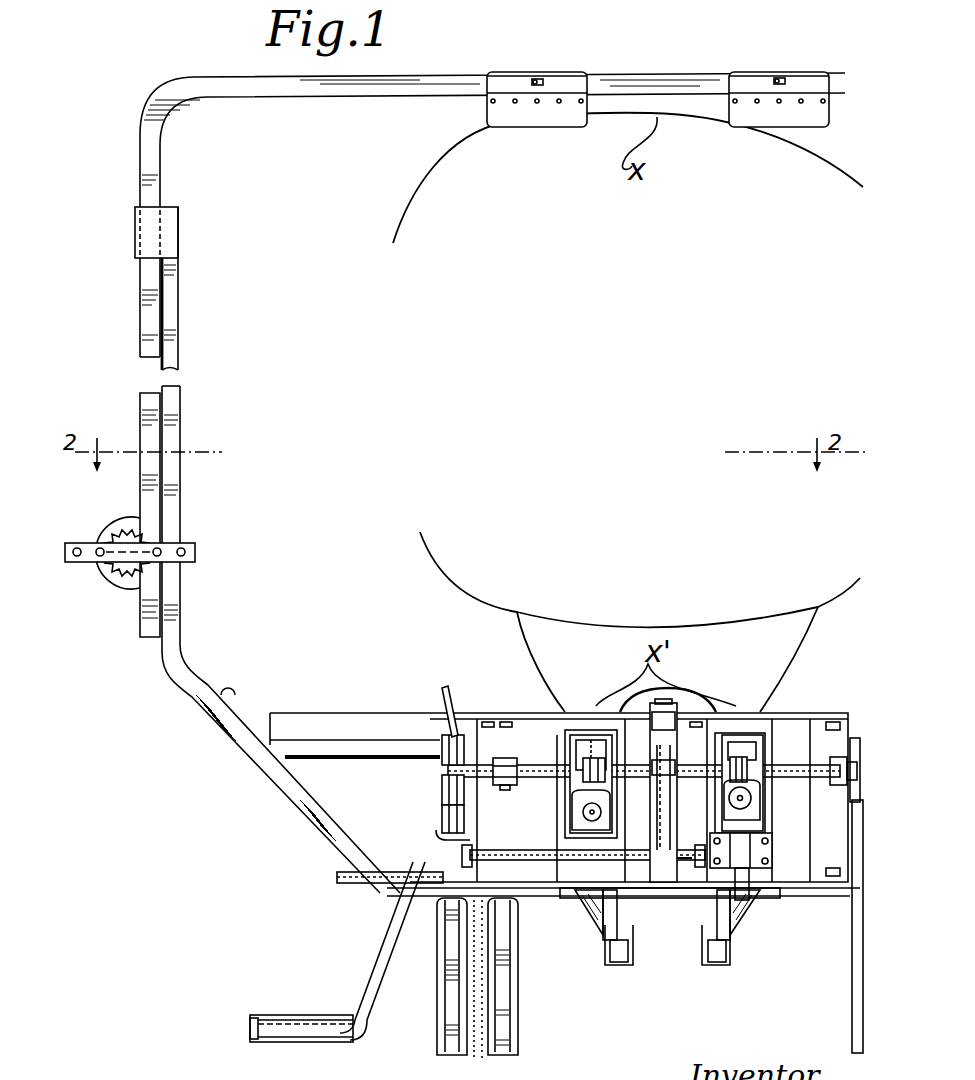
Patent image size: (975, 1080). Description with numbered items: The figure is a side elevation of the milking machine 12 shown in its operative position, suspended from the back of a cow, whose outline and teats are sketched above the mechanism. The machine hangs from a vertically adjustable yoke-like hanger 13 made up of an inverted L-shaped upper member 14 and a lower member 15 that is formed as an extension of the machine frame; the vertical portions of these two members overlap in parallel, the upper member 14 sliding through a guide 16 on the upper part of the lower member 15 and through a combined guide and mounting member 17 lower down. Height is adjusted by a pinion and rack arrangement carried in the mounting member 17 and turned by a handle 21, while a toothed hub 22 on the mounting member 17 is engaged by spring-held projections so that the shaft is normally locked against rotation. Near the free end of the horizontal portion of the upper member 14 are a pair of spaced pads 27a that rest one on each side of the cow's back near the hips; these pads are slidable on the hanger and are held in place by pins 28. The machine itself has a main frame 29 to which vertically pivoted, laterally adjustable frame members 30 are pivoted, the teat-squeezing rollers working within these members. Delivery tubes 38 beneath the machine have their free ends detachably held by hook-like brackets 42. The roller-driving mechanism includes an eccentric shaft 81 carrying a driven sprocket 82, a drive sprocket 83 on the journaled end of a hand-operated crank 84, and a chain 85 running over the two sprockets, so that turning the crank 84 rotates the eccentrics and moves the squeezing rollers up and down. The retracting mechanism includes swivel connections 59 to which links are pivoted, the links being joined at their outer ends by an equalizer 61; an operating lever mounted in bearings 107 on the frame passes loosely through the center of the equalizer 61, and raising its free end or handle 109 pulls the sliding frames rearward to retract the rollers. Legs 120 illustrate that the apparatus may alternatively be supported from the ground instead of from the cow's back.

The milking machine 12 is at (423, 906).
The yoke-like hanger 13 is at (186, 317).
The upper member 14 is at (330, 94).
The lower member 15 is at (168, 333).
The guide 16 is at (152, 228).
The combined guide and mounting member 17 is at (125, 590).
The handle 21 is at (195, 546).
The toothed hub 22 is at (110, 577).
The pads 27a is at (528, 118).
The pins 28 is at (540, 79).
The main frame 29 is at (486, 706).
The frame members 30 is at (553, 819).
The delivery tubes 38 is at (620, 962).
The hook-like brackets 42 is at (610, 935).
The swivel connections 59 is at (596, 780).
The equalizer 61 is at (712, 768).
The eccentric shaft 81 is at (521, 773).
The driven sprocket 82 is at (440, 764).
The drive sprocket 83 is at (440, 812).
The hand-operated crank 84 is at (387, 942).
The chain 85 is at (440, 793).
The bearings 107 is at (485, 872).
The handle of the lever 109 is at (365, 884).
The legs 120 is at (456, 1003).